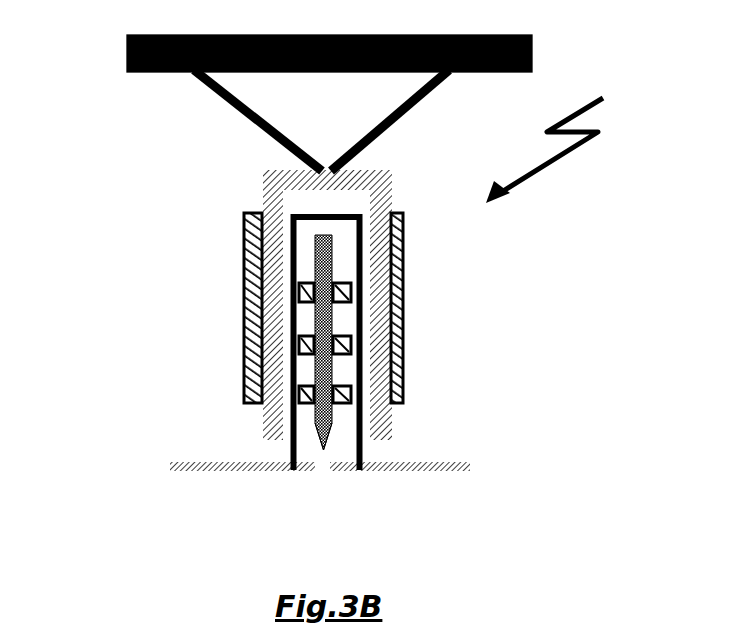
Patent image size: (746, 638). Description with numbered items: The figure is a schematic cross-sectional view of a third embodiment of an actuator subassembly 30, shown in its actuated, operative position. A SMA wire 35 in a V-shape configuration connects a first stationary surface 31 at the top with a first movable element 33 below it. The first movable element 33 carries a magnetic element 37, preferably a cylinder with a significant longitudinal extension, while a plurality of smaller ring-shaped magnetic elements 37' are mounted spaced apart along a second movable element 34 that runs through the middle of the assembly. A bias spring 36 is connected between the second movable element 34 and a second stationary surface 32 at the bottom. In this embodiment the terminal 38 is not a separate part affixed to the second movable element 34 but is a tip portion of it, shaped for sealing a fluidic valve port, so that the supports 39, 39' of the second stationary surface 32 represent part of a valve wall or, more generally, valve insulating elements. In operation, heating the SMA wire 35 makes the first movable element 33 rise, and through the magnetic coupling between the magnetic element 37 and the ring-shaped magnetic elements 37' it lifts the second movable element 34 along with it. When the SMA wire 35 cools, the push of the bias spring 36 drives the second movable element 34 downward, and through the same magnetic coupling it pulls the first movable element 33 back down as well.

The actuator subassembly 30 is at (571, 136).
The first stationary surface 31 is at (141, 73).
The second stationary surface 32 is at (355, 450).
The first movable element 33 is at (266, 187).
The second movable element 34 is at (332, 363).
The SMA wire 35 is at (234, 111).
The bias spring 36 is at (317, 231).
The magnetic element 37 is at (207, 315).
The ring-shaped magnetic elements 37' is at (441, 335).
The terminal 38 is at (323, 450).
The support 39 is at (206, 476).
The support 39' is at (462, 489).